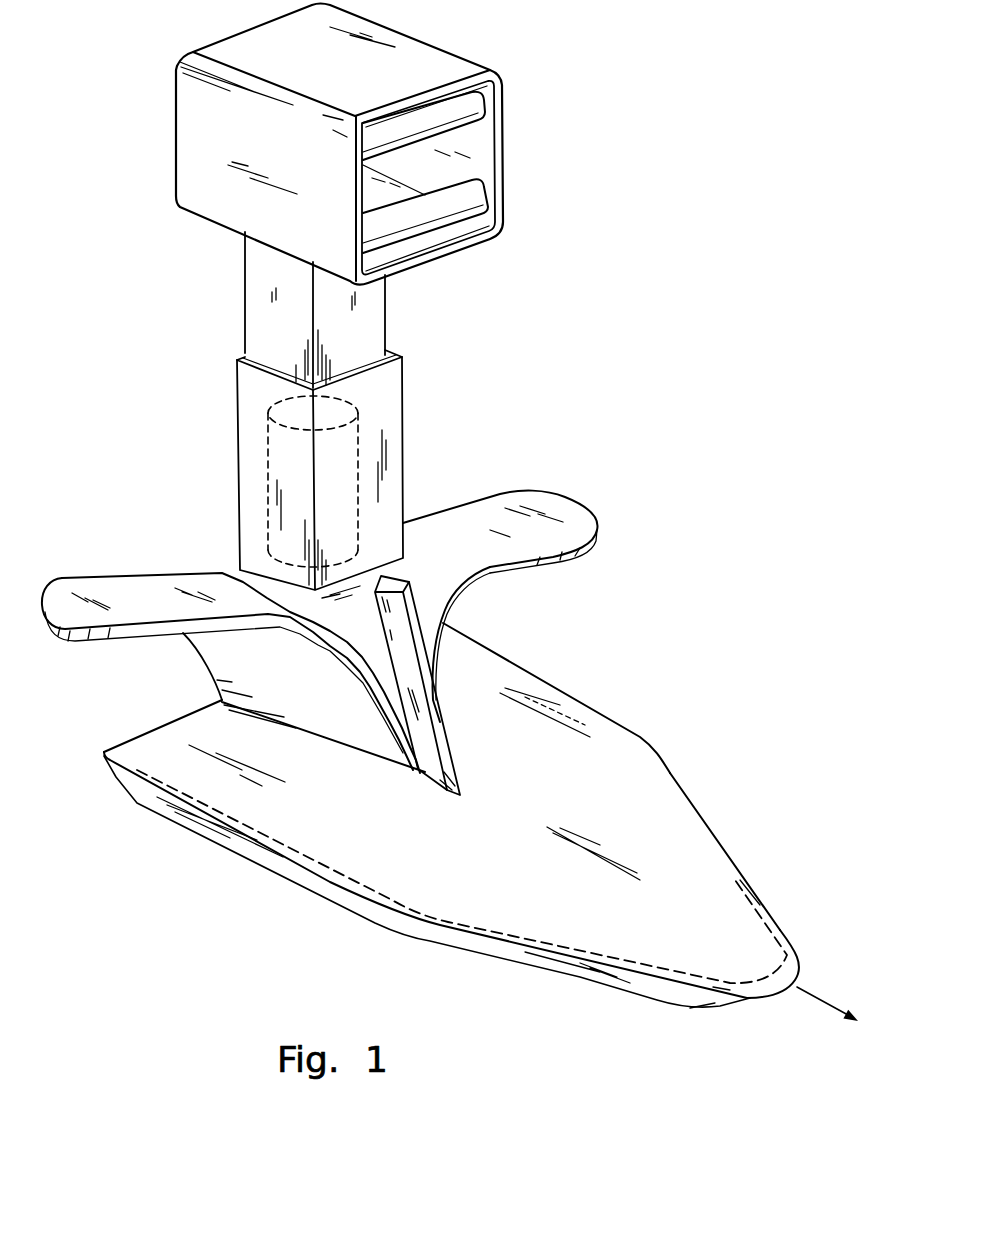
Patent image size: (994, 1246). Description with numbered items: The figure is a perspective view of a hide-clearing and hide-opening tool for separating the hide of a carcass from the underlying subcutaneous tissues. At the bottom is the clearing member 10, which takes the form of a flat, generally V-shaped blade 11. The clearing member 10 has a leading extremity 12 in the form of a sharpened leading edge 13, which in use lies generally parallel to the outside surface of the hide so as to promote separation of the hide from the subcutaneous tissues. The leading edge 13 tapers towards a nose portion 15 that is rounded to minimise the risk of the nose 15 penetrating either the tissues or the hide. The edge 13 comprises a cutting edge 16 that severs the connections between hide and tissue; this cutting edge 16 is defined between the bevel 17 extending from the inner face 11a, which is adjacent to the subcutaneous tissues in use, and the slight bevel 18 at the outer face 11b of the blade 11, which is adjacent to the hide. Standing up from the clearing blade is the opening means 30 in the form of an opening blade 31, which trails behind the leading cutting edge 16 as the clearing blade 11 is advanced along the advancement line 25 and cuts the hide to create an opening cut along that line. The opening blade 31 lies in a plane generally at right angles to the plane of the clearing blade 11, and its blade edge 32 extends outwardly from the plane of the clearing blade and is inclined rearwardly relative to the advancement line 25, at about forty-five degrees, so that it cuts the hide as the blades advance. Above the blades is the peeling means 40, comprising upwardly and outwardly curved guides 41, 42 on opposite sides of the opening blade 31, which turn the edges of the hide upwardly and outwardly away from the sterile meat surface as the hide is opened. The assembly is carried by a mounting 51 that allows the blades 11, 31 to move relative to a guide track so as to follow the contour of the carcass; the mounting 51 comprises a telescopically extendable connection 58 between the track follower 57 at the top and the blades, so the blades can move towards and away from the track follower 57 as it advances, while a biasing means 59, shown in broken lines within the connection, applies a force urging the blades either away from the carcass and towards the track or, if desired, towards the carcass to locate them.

The clearing member 10 is at (481, 839).
The blade 11 is at (655, 774).
The inner face 11a is at (566, 983).
The outer face 11b is at (518, 915).
The leading extremity 12 is at (753, 903).
The leading edge 13 is at (732, 855).
The nose portion 15 is at (803, 973).
The cutting edge 16 is at (670, 980).
The bevel 17 is at (707, 1000).
The slight bevel 18 is at (713, 987).
The advancement line 25 is at (830, 1008).
The opening means 30 is at (411, 718).
The opening blade 31 is at (428, 768).
The blade edge 32 is at (443, 720).
The peeling means 40 is at (320, 586).
The curved guide 41 is at (562, 508).
The curved guide 42 is at (155, 585).
The mounting 51 is at (232, 352).
The track follower 57 is at (437, 65).
The telescopically extendable connection 58 is at (405, 356).
The biasing means 59 is at (268, 475).